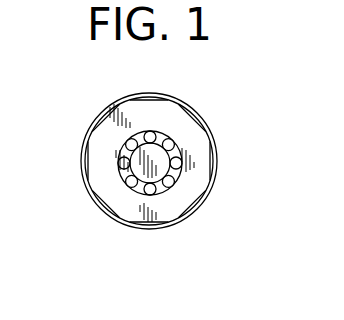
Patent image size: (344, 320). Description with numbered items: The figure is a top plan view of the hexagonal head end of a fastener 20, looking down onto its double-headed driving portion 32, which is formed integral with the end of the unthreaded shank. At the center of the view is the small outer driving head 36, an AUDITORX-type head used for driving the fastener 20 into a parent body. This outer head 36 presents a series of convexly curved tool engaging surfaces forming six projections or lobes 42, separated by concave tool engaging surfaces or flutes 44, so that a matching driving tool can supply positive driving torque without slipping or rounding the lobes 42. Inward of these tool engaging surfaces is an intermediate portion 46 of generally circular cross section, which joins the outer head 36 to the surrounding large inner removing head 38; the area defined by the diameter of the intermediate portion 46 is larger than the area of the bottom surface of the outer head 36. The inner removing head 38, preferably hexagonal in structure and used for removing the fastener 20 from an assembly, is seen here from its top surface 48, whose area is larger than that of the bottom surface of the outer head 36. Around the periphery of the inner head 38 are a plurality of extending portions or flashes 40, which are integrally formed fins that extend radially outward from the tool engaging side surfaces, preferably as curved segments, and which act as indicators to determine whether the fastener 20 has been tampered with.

The fastener 20 is at (211, 104).
The double-headed driving portion 32 is at (216, 190).
The small outer driving head 36 is at (160, 168).
The large inner removing head 38 is at (140, 113).
The flashes 40 is at (92, 125).
The lobes 42 is at (133, 190).
The flutes 44 is at (149, 132).
The intermediate portion 46 is at (175, 182).
The top surface 48 is at (100, 163).